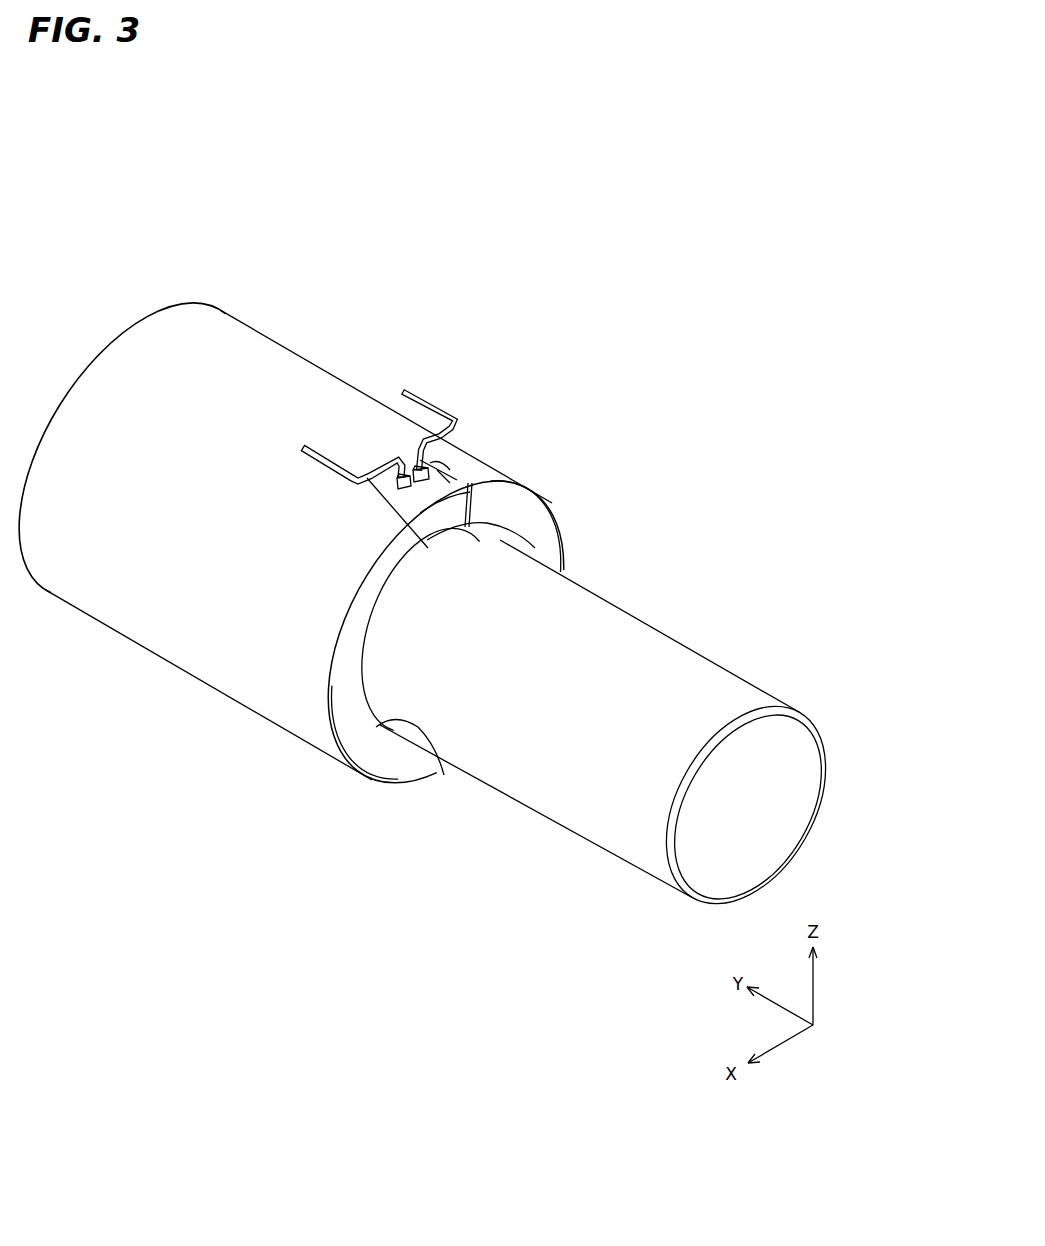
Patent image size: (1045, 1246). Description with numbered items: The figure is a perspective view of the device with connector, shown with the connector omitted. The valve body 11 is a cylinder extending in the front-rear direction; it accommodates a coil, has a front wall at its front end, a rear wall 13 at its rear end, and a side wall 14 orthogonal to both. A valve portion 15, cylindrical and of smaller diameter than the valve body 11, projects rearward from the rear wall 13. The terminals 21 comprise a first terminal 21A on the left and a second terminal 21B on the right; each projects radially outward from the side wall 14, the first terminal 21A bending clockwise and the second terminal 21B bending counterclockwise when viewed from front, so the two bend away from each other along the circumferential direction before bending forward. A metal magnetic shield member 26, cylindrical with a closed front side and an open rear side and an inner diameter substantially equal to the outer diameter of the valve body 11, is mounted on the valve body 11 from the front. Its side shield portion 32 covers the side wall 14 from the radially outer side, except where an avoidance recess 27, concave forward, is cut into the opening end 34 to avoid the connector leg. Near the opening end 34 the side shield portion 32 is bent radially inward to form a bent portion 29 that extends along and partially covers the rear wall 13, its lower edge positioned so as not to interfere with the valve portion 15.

The valve body 11 is at (497, 621).
The rear wall 13 is at (447, 520).
The side wall 14 is at (423, 492).
The valve portion 15 is at (648, 643).
The terminals 21 is at (379, 367).
The first terminal 21A is at (330, 460).
The second terminal 21B is at (426, 385).
The magnetic shield member 26 is at (100, 595).
The avoidance recess 27 is at (447, 447).
The bent portion 29 is at (362, 742).
The side shield portion 32 is at (163, 650).
The opening end 34 is at (440, 750).